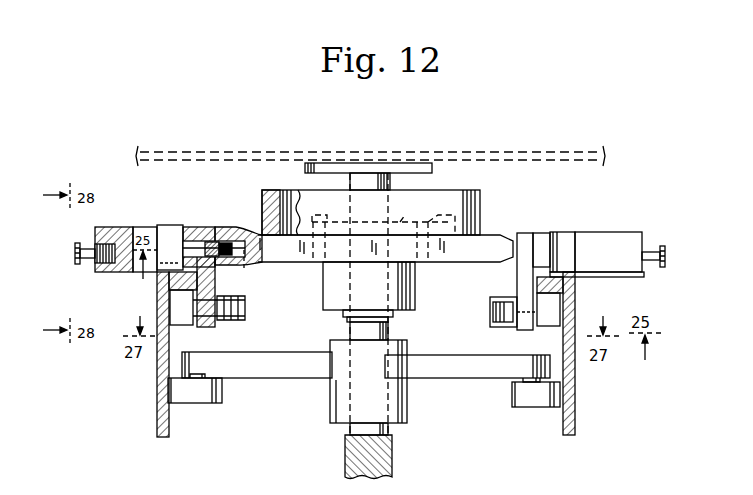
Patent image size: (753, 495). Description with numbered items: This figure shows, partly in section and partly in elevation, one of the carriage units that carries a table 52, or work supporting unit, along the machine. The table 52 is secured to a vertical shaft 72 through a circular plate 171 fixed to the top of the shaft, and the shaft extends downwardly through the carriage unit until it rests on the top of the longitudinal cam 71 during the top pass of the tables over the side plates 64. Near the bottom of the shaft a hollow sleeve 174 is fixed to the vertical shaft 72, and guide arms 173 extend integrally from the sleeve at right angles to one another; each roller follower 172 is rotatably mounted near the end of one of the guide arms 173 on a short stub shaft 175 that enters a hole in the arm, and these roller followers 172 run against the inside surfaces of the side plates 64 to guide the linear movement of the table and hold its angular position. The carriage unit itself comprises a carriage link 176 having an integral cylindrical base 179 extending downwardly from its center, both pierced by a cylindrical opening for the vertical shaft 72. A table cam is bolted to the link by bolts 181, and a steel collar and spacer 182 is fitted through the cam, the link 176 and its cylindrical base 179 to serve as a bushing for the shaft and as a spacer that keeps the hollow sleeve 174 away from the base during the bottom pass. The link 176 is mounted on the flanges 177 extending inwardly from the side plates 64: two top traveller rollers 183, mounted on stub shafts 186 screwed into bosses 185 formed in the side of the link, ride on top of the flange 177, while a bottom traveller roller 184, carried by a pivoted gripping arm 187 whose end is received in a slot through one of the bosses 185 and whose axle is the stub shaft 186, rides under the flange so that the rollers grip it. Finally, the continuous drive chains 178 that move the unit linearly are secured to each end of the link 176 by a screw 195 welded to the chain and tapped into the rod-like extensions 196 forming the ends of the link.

The table 52 is at (457, 152).
The circular plate 171 is at (378, 163).
The bolts 181 is at (336, 222).
The steel collar and spacer 182 is at (405, 217).
The carriage link 176 is at (440, 260).
The cylindrical base 179 is at (330, 280).
The vertical shaft 72 is at (392, 334).
The hollow sleeve 174 is at (334, 405).
The longitudinal cam 71 is at (393, 460).
The guide arms 173 is at (292, 360).
The roller followers 172 is at (223, 392).
The stub shaft 175 is at (196, 374).
The side plates 64 is at (157, 405).
The flanges 177 is at (166, 283).
The gripping arm 187 is at (220, 276).
The top traveller rollers 183 is at (172, 226).
The rod-like extensions 196 is at (118, 227).
The screw 195 is at (108, 271).
The drive chains 178 is at (75, 254).
The bosses 185 is at (236, 236).
The stub shafts 186 is at (204, 244).
The bottom traveller roller 184 is at (536, 334).